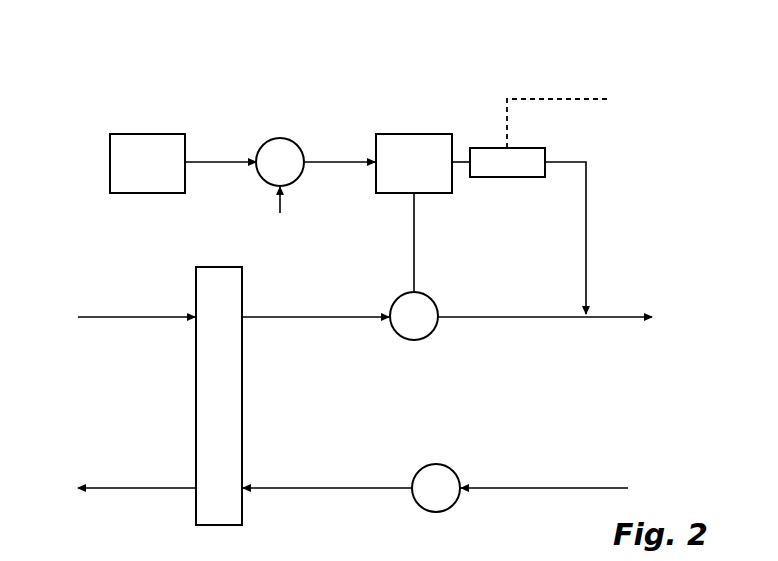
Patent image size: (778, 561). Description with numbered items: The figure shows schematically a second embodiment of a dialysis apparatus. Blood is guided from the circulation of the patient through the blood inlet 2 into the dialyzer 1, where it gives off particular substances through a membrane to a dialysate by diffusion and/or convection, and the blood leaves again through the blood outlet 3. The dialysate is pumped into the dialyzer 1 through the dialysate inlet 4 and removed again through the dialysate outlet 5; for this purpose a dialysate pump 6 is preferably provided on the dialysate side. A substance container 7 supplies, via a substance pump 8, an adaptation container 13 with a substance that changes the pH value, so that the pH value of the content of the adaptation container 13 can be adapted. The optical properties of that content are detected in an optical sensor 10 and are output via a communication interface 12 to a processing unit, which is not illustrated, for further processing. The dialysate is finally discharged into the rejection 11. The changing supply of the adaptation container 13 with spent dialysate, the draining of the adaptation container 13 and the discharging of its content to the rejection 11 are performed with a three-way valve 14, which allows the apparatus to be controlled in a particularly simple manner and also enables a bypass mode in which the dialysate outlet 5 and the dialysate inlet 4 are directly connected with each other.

The dialyzer 1 is at (189, 382).
The blood inlet 2 is at (134, 312).
The blood outlet 3 is at (95, 485).
The dialysate inlet 4 is at (318, 484).
The dialysate outlet 5 is at (347, 316).
The dialysate pump 6 is at (436, 463).
The substance container 7 is at (151, 132).
The substance pump 8 is at (244, 188).
The optical sensor 10 is at (510, 180).
The rejection 11 is at (610, 312).
The communication interface 12 is at (617, 100).
The adaptation container 13 is at (415, 131).
The three-way valve 14 is at (392, 296).